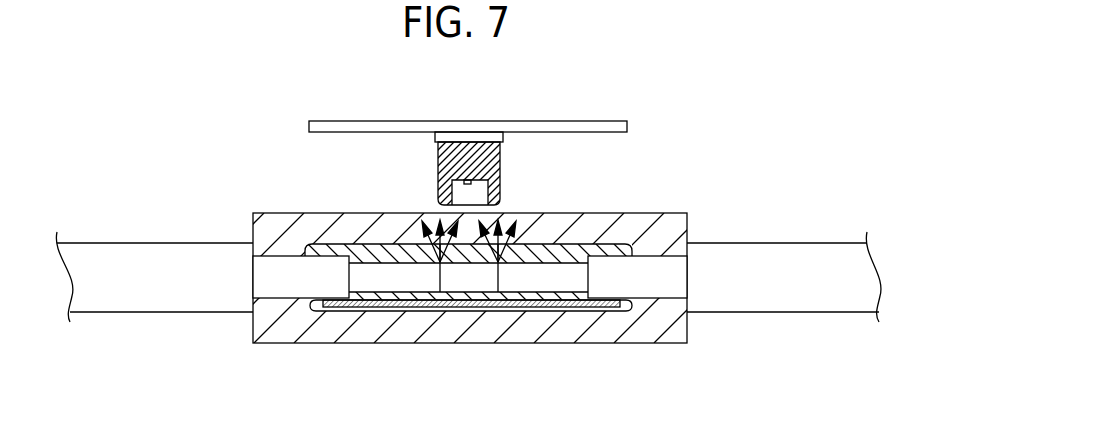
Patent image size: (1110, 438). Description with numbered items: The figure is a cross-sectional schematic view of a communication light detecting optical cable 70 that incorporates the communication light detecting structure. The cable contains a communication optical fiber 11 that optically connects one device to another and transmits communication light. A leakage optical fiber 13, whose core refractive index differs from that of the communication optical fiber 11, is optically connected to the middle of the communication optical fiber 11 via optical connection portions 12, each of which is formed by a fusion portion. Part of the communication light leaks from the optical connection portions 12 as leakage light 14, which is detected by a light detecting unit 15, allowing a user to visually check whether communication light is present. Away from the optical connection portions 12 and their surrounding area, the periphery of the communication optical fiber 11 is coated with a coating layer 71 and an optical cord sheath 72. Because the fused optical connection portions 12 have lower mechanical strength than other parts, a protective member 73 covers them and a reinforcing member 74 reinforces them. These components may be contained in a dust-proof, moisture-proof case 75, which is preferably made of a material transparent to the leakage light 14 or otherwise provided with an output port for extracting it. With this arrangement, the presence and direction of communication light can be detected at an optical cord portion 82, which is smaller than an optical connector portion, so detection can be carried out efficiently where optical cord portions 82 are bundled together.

The communication light detecting optical cable 70 is at (170, 203).
The light detecting unit 15 is at (503, 168).
The case 75 is at (262, 322).
The leakage light 14 is at (533, 247).
The leakage optical fiber 13 is at (481, 291).
The protective member 73 is at (625, 303).
The reinforcing member 74 is at (433, 303).
The communication optical fiber 11 is at (383, 283).
The coating layer 71 is at (290, 293).
The optical connection portions 12 is at (417, 237).
The optical cord sheath 72 is at (127, 302).
The optical cord portion 82 is at (714, 335).